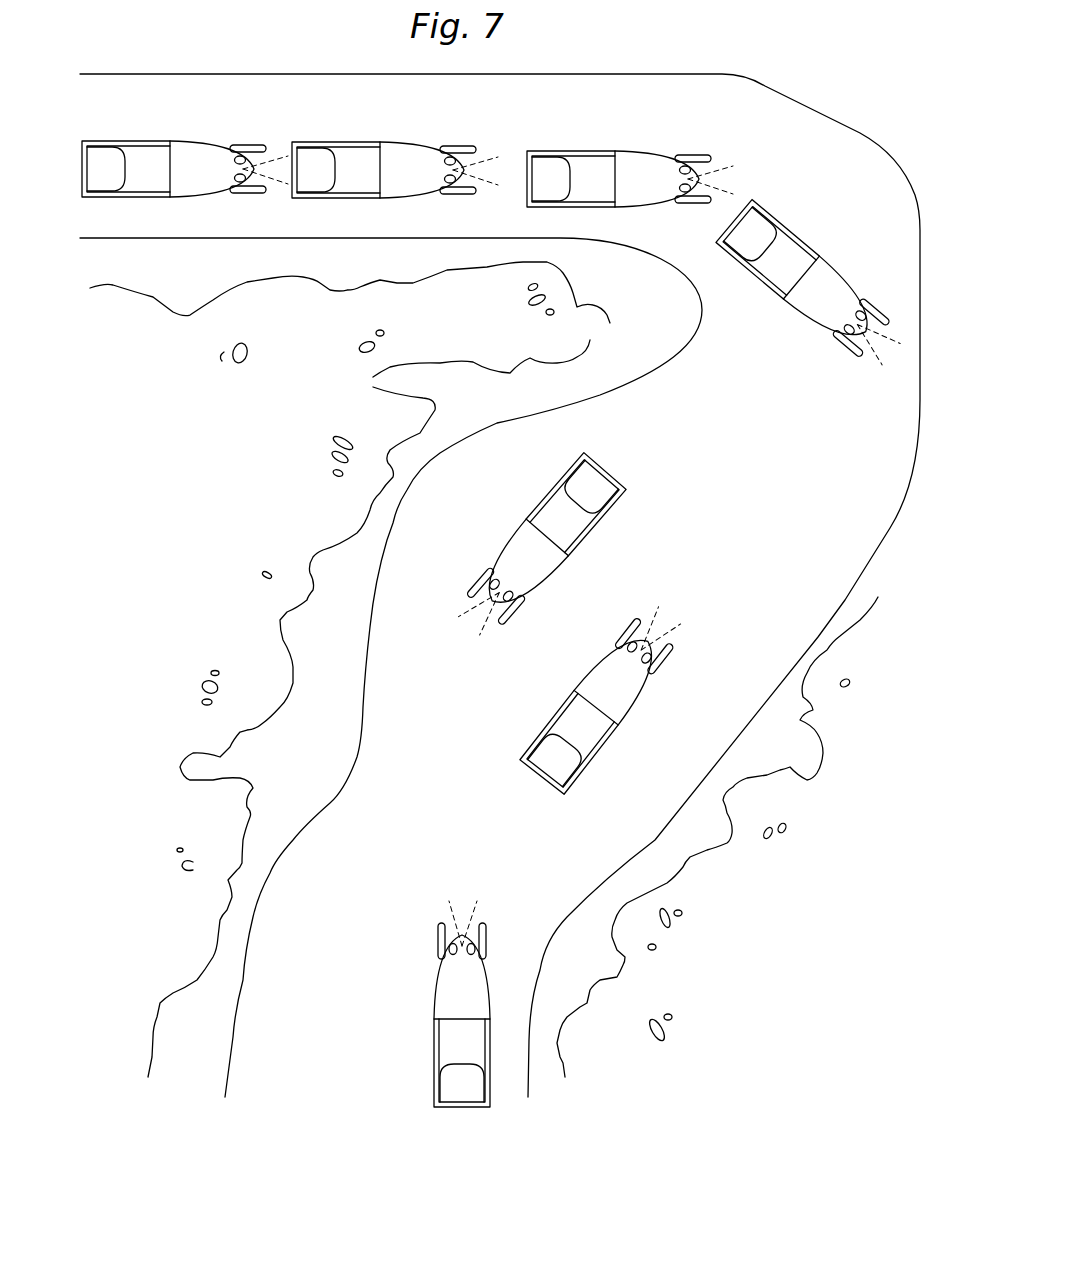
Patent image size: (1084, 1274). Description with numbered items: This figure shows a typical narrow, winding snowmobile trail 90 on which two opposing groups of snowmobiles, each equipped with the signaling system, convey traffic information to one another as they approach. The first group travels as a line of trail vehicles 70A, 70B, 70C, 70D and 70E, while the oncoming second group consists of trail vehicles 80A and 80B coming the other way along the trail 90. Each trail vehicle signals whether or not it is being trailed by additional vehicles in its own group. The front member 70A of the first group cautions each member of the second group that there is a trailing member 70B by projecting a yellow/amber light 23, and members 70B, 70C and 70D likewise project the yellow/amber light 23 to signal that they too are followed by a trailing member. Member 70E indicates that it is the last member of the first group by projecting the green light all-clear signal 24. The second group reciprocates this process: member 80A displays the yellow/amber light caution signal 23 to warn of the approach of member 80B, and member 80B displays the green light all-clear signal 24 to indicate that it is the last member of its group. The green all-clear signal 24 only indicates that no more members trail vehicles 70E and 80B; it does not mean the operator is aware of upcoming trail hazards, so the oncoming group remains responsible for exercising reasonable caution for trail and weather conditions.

The trail 90 is at (851, 124).
The trail vehicle 70A is at (516, 499).
The trail vehicle 70B is at (858, 259).
The trail vehicle 70C is at (623, 137).
The trail vehicle 70D is at (398, 131).
The trail vehicle 70E is at (203, 129).
The oncoming trail vehicle 80A is at (614, 753).
The oncoming trail vehicle 80B is at (420, 1033).
The yellow/amber light 23 is at (451, 156).
The green light all-clear signal 24 is at (240, 184).